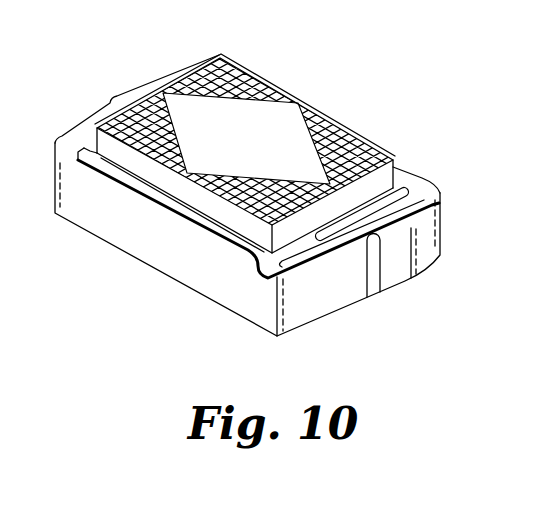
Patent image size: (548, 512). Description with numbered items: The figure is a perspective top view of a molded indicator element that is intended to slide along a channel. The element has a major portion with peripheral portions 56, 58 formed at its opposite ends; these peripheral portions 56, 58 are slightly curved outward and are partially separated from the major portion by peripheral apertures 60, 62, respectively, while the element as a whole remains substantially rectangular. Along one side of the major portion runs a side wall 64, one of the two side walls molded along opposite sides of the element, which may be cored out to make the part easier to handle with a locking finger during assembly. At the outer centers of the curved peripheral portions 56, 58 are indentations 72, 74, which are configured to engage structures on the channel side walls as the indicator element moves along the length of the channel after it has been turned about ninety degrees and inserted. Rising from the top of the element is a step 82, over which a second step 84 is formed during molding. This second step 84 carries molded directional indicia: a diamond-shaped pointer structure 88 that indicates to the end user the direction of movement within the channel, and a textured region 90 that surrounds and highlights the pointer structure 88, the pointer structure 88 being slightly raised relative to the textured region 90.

The peripheral portion 56 is at (401, 274).
The peripheral portion 58 is at (163, 77).
The peripheral aperture 60 is at (319, 246).
The peripheral aperture 62 is at (91, 137).
The side wall 64 is at (204, 290).
The indentation 72 is at (373, 290).
The indentation 74 is at (113, 99).
The step 82 is at (400, 165).
The second step 84 is at (397, 160).
The pointer structure 88 is at (298, 106).
The textured region 90 is at (243, 67).